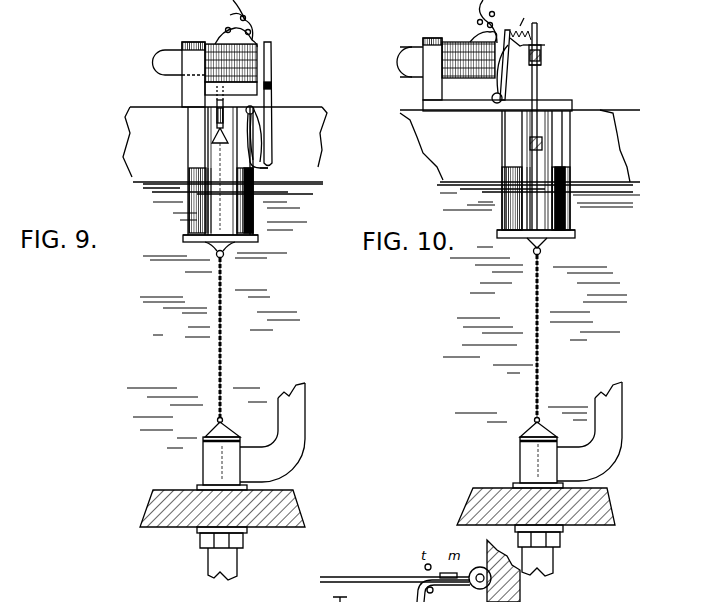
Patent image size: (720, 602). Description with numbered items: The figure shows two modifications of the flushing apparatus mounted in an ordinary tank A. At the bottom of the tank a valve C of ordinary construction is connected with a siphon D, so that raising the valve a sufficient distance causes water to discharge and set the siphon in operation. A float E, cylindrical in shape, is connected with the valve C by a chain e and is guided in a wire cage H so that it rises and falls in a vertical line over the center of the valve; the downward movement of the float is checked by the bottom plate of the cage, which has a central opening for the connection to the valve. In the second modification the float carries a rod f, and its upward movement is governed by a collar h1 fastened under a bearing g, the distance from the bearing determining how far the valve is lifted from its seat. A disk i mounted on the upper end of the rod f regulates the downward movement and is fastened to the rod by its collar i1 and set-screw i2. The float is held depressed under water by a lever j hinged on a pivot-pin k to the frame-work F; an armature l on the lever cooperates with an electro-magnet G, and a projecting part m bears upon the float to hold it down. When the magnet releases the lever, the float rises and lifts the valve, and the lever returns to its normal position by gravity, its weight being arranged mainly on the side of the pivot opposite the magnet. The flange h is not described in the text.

In FIG. 9, the tank A is at (133, 108).
In FIG. 10, the tank A is at (597, 132).
In FIG. 9, the valve C is at (222, 499).
In FIG. 10, the valve C is at (536, 495).
In FIG. 9, the siphon D is at (305, 403).
In FIG. 10, the siphon D is at (622, 403).
In FIG. 9, the float E is at (250, 223).
In FIG. 10, the float E is at (573, 185).
In FIG. 9, the frame-work F is at (192, 90).
In FIG. 10, the frame-work F is at (470, 96).
In FIG. 9, the electro-magnet G is at (215, 43).
In FIG. 10, the electro-magnet G is at (466, 42).
In FIG. 9, the wire cage H is at (189, 152).
In FIG. 10, the wire cage H is at (503, 143).
In FIG. 9, the chain e is at (227, 338).
In FIG. 10, the chain e is at (527, 336).
In FIG. 10, the rod f is at (540, 82).
In FIG. 9, the bearing g is at (220, 124).
In FIG. 9, the flange h is at (185, 238).
In FIG. 10, the flange h is at (577, 236).
In FIG. 10, the collar h1 is at (542, 148).
In FIG. 10, the disk i is at (546, 48).
In FIG. 10, the collar i1 is at (541, 64).
In FIG. 10, the set-screw i2 is at (543, 57).
In FIG. 9, the lever j is at (268, 122).
In FIG. 10, the lever j is at (510, 66).
In FIG. 9, the pivot-pin k is at (247, 126).
In FIG. 10, the pivot-pin k is at (492, 102).
In FIG. 9, the armature l is at (272, 68).
In FIG. 10, the armature l is at (508, 65).
In FIG. 9, the projecting part m is at (268, 166).
In FIG. 10, the projecting part m is at (526, 17).